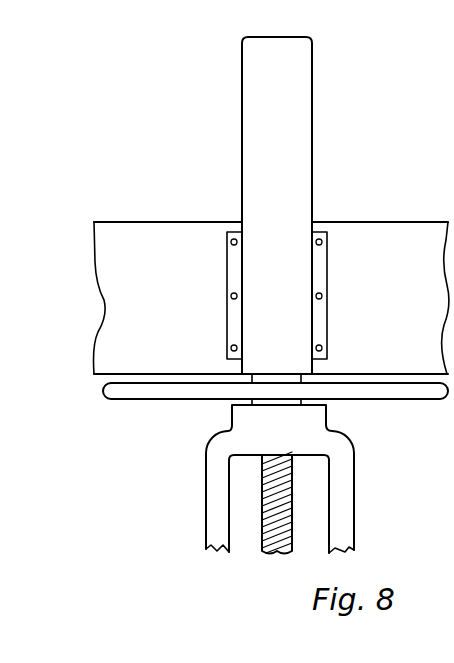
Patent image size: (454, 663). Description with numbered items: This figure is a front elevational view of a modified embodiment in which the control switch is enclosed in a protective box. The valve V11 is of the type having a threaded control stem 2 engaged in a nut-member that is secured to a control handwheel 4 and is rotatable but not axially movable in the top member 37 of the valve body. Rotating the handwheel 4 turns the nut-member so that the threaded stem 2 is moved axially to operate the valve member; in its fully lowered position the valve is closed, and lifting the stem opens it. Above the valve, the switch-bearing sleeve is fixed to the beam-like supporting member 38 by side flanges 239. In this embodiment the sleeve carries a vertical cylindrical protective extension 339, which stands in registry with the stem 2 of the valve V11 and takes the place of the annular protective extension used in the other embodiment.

The vertical cylindrical protective extension 339 is at (254, 112).
The beam-like member 38 is at (412, 228).
The side flanges 239 is at (232, 308).
The control handwheel 4 is at (112, 399).
The top member of the valve body 37 is at (245, 415).
The valve V11 is at (354, 510).
The threaded control stem 2 is at (292, 507).